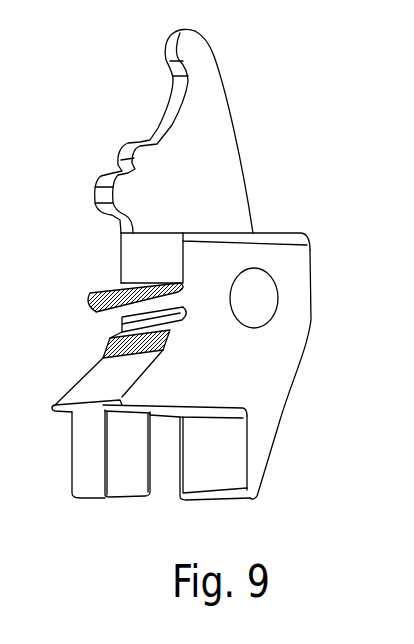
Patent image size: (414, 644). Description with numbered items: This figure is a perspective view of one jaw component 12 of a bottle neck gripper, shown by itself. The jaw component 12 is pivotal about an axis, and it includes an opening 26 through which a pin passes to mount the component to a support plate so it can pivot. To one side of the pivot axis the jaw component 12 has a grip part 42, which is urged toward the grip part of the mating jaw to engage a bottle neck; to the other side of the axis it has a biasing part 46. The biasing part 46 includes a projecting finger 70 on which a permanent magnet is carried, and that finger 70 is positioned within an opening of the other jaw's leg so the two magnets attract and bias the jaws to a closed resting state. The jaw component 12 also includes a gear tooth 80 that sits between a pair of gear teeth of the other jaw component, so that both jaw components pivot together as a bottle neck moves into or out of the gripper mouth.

The jaw component 12 is at (315, 147).
The grip part 42 is at (218, 105).
The opening 26 is at (265, 290).
The biasing part 46 is at (280, 385).
The gear tooth 80 is at (100, 300).
The projecting finger 70 is at (100, 475).